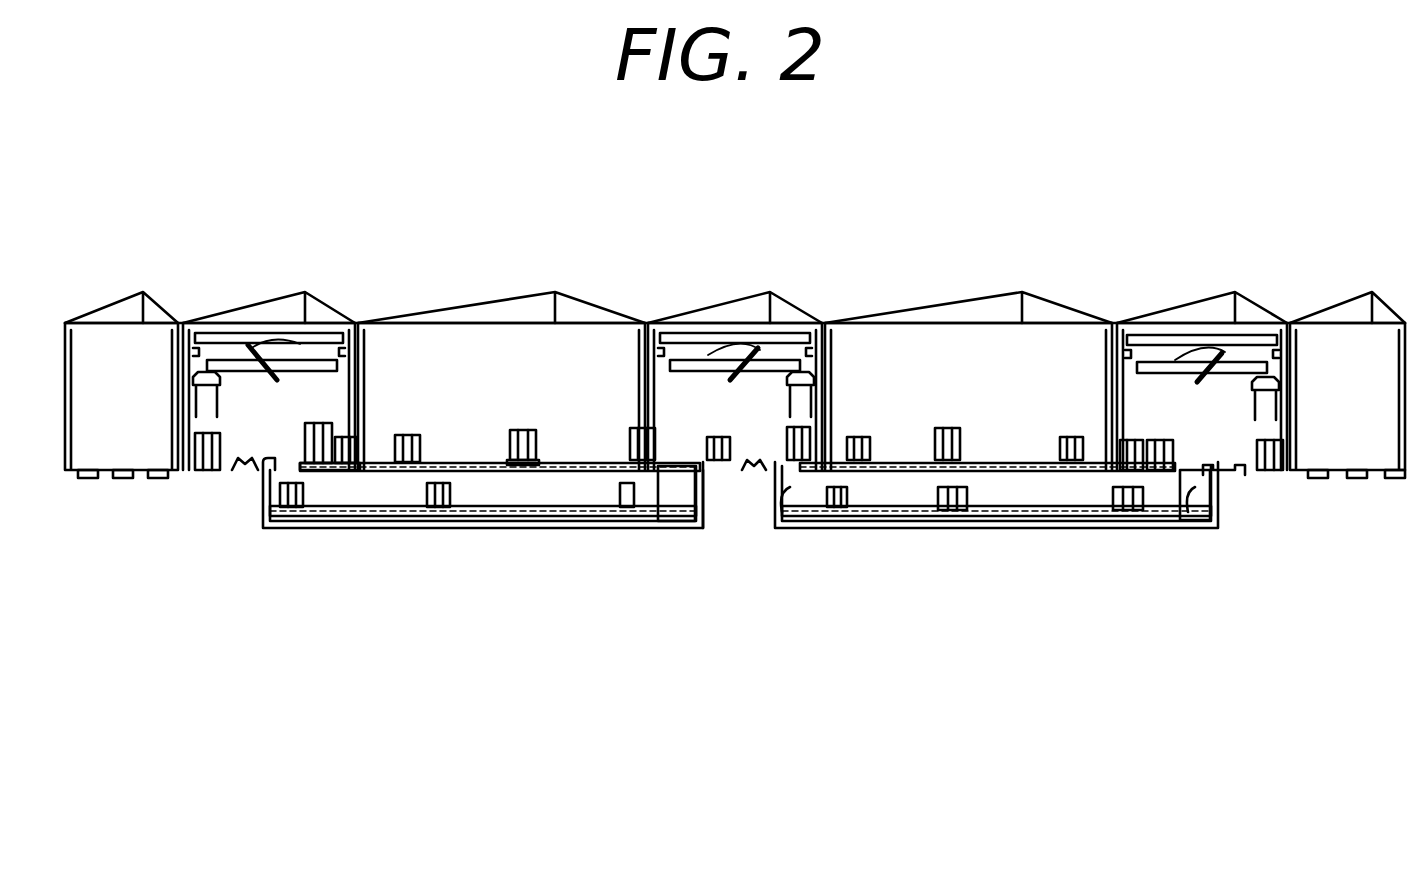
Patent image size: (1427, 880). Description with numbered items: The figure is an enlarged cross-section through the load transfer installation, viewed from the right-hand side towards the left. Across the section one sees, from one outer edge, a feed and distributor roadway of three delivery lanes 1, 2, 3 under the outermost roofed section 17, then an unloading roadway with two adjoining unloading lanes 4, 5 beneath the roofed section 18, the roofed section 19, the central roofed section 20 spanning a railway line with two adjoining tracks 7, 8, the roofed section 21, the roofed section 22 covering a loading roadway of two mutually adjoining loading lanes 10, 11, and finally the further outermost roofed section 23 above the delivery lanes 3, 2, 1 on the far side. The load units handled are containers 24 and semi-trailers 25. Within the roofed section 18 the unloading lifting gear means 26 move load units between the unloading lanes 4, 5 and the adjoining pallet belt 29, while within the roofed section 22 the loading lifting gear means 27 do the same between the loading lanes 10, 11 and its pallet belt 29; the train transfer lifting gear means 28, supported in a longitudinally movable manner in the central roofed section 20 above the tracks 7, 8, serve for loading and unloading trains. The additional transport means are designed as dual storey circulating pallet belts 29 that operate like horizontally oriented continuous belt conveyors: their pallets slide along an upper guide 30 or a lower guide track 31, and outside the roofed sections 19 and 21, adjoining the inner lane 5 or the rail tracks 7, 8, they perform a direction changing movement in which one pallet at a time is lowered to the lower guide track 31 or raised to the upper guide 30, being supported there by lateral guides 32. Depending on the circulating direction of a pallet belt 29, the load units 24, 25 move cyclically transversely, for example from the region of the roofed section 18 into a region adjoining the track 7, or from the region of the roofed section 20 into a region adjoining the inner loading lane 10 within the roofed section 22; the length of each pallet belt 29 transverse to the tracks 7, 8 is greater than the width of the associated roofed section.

The delivery lane 1 is at (84, 480).
The delivery lane 2 is at (121, 480).
The delivery lane 3 is at (158, 480).
The unloading lane 4 is at (1273, 477).
The unloading lane 5 is at (1235, 477).
The track 7 is at (753, 473).
The track 8 is at (722, 473).
The loading lane 10 is at (242, 475).
The loading lane 11 is at (207, 475).
The roofed section 17 is at (1338, 343).
The roofed section 18 is at (1195, 315).
The roofed section 19 is at (931, 345).
The central roofed section 20 is at (731, 313).
The roofed section 21 is at (455, 345).
The roofed section 22 is at (276, 312).
The roofed section 23 is at (103, 336).
The container 24 is at (417, 447).
The semi-trailer 25 is at (532, 437).
The unloading lifting gear means 26 is at (1172, 376).
The loading lifting gear means 27 is at (312, 377).
The train transfer lifting gear means 28 is at (763, 380).
The pallet belt 29 is at (512, 557).
The upper guide 30 is at (375, 473).
The lower guide track 31 is at (423, 518).
The lateral guide 32 is at (783, 500).